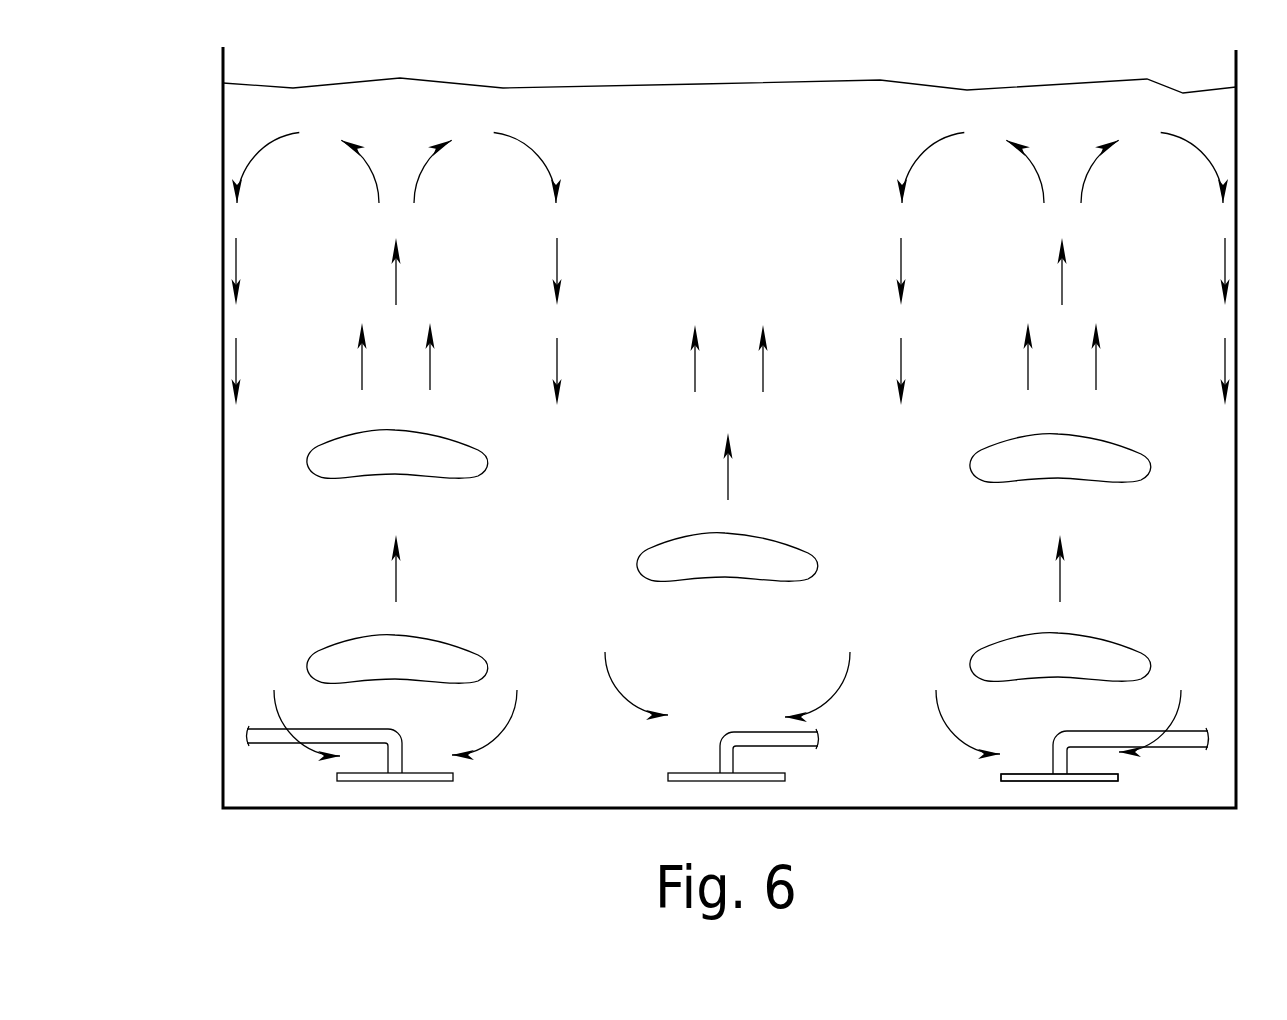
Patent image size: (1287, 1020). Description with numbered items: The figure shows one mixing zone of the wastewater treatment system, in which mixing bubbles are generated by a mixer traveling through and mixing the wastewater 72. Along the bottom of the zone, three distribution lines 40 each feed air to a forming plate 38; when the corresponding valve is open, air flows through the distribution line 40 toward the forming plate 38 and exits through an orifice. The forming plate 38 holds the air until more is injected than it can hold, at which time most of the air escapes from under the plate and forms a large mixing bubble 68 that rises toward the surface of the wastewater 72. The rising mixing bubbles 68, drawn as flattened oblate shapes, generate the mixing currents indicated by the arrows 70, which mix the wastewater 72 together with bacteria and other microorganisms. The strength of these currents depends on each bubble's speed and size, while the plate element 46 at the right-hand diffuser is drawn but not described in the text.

The forming plate 38 is at (385, 797).
The distribution line 40 is at (268, 728).
The diffuser plate 46 is at (1117, 779).
The mixing bubble 68 is at (315, 450).
The mixing current arrows 70 is at (430, 370).
The wastewater 72 is at (316, 85).